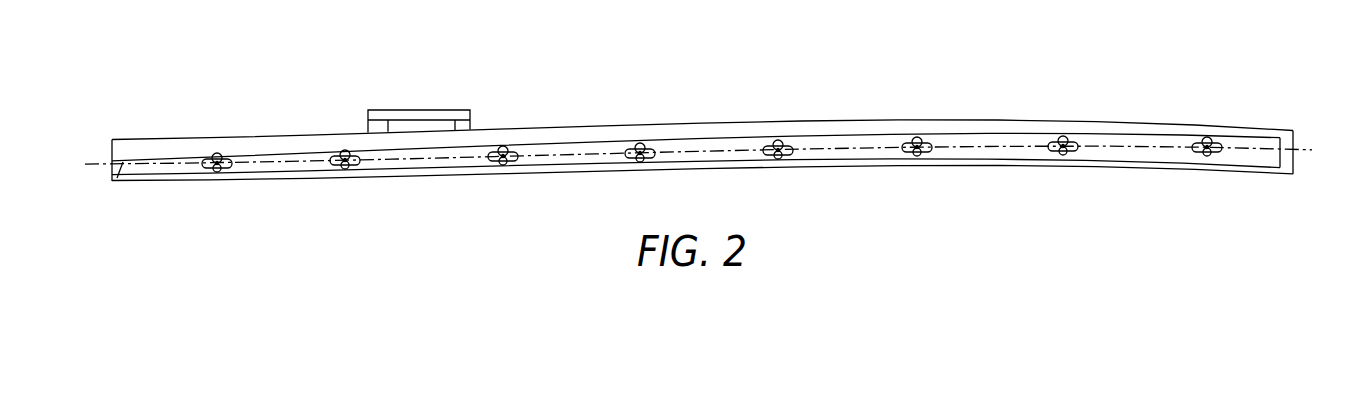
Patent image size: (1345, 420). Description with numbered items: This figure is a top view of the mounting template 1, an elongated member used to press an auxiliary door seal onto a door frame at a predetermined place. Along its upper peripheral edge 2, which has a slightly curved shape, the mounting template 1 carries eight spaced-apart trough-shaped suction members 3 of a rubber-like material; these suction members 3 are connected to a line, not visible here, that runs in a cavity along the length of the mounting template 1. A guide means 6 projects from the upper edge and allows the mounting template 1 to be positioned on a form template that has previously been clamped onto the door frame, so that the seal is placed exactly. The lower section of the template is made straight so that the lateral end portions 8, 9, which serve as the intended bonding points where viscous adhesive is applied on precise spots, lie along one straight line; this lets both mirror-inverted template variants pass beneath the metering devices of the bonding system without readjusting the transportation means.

The mounting template 1 is at (703, 111).
The peripheral edge 2 is at (713, 136).
The trough-shaped suction members 3 is at (505, 151).
The guide means 6 is at (435, 112).
The lateral end portion 8 is at (138, 160).
The lateral end portion 9 is at (1268, 150).